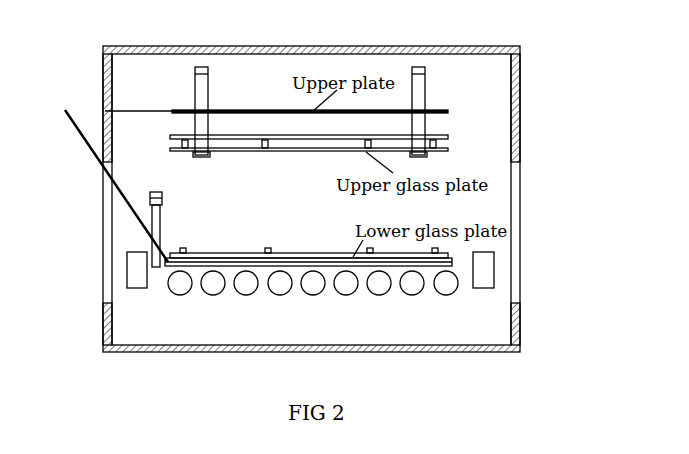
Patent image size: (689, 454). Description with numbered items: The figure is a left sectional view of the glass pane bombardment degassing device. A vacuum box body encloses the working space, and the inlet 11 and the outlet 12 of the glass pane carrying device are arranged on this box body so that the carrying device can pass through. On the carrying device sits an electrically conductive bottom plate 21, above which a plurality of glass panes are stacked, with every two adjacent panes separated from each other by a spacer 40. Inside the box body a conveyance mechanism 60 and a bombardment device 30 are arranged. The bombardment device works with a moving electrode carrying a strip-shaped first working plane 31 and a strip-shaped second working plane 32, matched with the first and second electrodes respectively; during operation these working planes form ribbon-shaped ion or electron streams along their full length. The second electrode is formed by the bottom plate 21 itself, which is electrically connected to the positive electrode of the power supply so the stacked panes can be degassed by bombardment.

The inlet 11 is at (103, 235).
The outlet 12 is at (518, 214).
The bottom plate 21 is at (455, 264).
The bombardment device 30 is at (152, 194).
The first working plane 31 is at (162, 194).
The second working plane 32 is at (162, 208).
The spacer 40 is at (184, 248).
The conveyance mechanism 60 is at (180, 283).